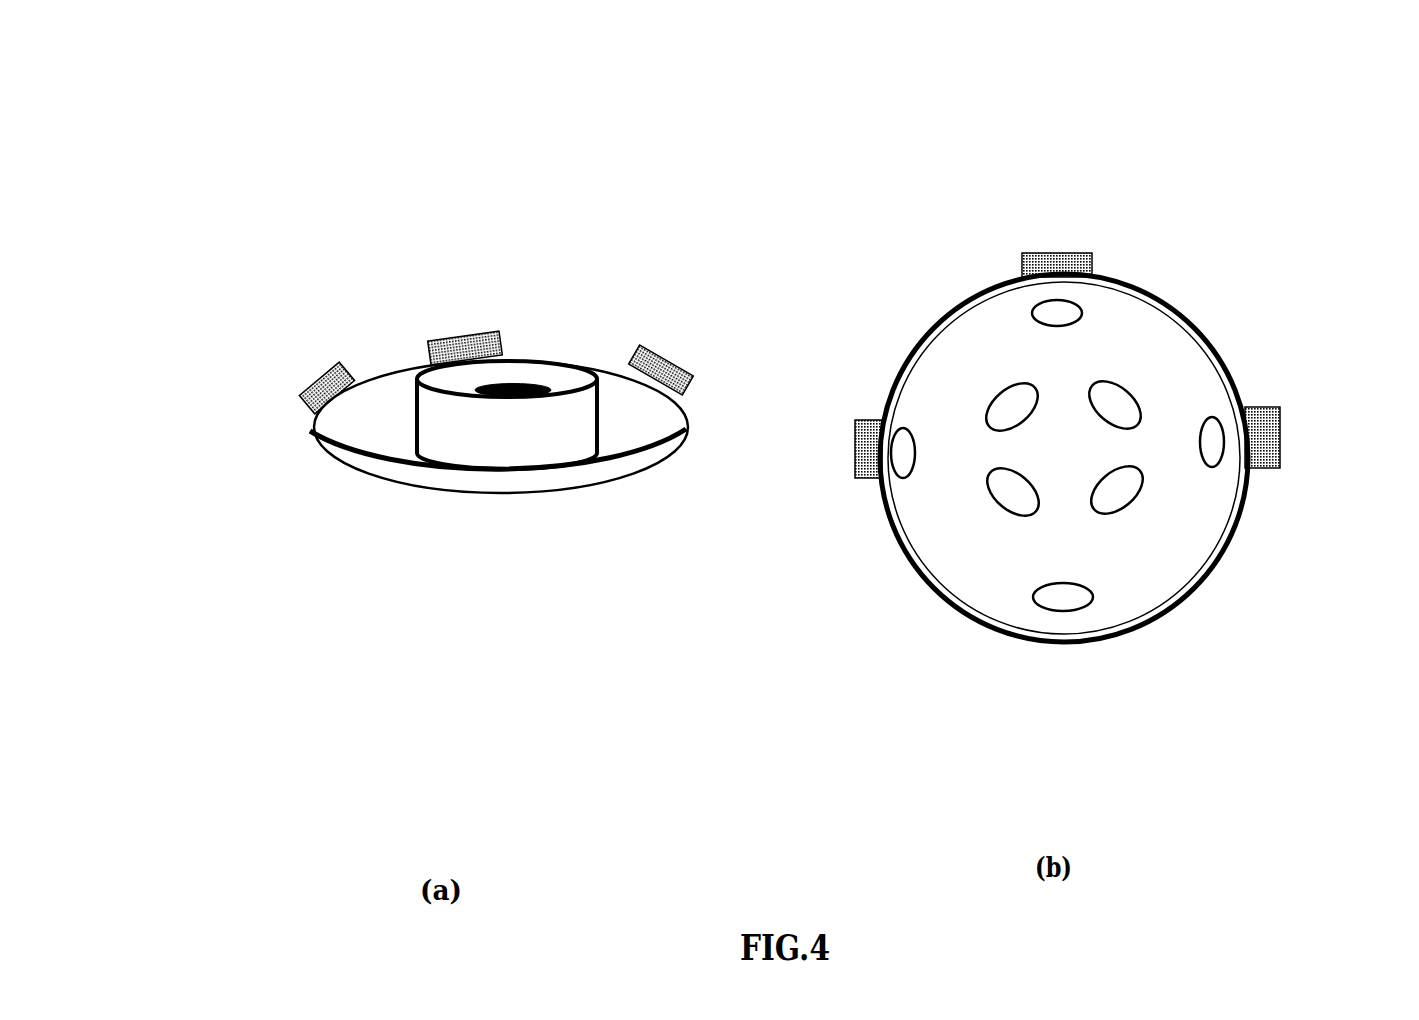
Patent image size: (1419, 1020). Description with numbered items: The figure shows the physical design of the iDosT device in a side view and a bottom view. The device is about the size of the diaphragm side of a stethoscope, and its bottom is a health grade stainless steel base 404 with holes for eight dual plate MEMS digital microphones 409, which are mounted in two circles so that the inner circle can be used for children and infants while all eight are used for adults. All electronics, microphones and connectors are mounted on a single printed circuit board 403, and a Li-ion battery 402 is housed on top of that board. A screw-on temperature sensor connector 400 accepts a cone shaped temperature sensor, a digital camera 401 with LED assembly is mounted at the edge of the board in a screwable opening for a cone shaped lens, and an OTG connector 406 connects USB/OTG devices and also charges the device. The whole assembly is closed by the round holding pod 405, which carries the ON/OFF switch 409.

The temperature sensor connector 400 is at (680, 201).
The digital camera 401 is at (500, 499).
The Li-ion battery 402 is at (501, 591).
The printed circuit board 403 is at (400, 558).
The stainless steel base 404 is at (779, 571).
The holding pod 405 is at (656, 389).
The OTG connector 406 is at (1020, 325).
The dual plate MEMS digital microphone 409 is at (902, 475).